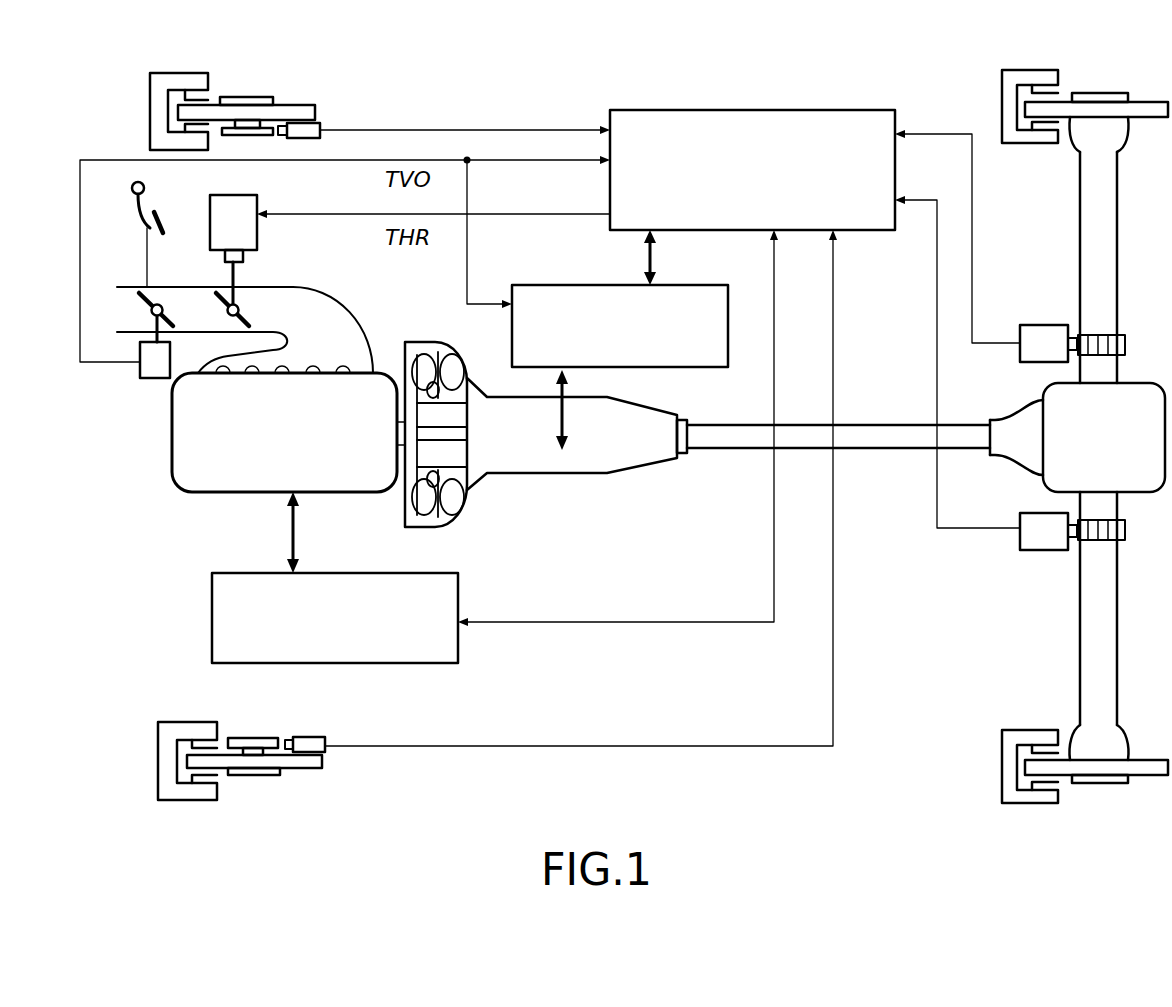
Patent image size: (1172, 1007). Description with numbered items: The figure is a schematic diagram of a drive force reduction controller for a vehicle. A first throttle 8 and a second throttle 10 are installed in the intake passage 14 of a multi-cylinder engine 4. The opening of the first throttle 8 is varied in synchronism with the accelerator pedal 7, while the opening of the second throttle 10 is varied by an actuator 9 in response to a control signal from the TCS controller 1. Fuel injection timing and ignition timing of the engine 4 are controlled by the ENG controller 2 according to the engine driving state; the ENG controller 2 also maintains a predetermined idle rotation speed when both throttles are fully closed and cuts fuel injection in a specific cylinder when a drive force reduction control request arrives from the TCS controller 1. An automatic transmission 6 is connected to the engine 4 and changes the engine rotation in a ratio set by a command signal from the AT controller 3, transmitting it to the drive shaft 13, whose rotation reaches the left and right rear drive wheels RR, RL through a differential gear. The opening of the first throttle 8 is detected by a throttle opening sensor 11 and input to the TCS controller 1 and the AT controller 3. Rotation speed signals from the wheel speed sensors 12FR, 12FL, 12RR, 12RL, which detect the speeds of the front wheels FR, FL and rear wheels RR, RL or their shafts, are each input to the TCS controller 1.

The TCS controller 1 is at (661, 110).
The ENG controller 2 is at (248, 573).
The AT controller 3 is at (558, 285).
The engine 4 is at (172, 465).
The automatic transmission 6 is at (520, 473).
The accelerator pedal 7 is at (130, 208).
The first throttle 8 is at (137, 302).
The actuator 9 is at (210, 200).
The second throttle 10 is at (216, 300).
The throttle opening sensor 11 is at (157, 382).
The drive shaft 13 is at (879, 445).
The intake passage 14 is at (190, 318).
The wheel speed sensor 12FR is at (322, 128).
The wheel speed sensor 12FL is at (328, 752).
The wheel speed sensor 12RR is at (1042, 325).
The wheel speed sensor 12RL is at (1033, 552).
The front right wheel FR is at (232, 106).
The front left wheel FL is at (240, 769).
The right rear wheel RR is at (1145, 100).
The left rear wheel RL is at (1143, 768).